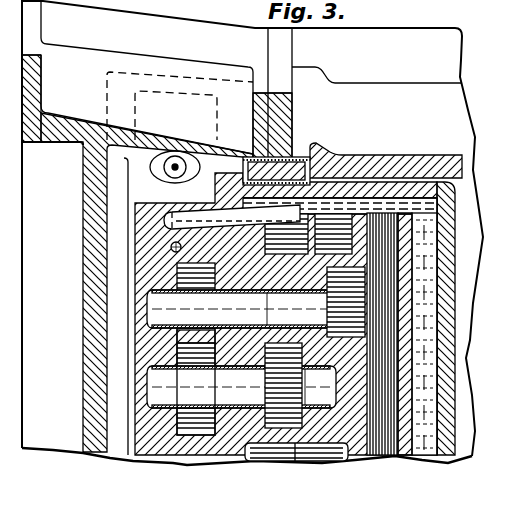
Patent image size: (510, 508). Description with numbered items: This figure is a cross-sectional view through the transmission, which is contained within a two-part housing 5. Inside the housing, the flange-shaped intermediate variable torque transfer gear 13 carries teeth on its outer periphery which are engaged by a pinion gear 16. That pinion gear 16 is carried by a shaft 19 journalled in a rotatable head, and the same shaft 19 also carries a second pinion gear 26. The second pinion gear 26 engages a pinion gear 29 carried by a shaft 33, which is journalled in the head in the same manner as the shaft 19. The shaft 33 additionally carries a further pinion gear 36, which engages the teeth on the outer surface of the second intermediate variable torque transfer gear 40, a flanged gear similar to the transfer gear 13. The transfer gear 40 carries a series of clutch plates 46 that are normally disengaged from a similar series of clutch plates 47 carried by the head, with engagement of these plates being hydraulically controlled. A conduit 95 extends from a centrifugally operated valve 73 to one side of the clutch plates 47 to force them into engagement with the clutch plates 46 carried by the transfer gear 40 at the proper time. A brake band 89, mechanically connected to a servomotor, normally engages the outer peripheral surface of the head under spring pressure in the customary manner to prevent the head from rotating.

The housing 5 is at (68, 127).
The centrifugally operated valve 73 is at (166, 151).
The brake band 89 is at (295, 167).
The intermediate variable torque transfer gear 13 is at (300, 180).
The second intermediate variable torque transfer gear 40 is at (340, 213).
The conduit 95 is at (200, 223).
The pinion gear 29 is at (157, 288).
The shaft 33 is at (153, 308).
The shaft 19 is at (157, 386).
The second pinion gear 26 is at (167, 415).
The pinion gear 16 is at (280, 386).
The further pinion gear 36 is at (398, 270).
The clutch plates 47 is at (398, 333).
The clutch plates 46 is at (402, 398).